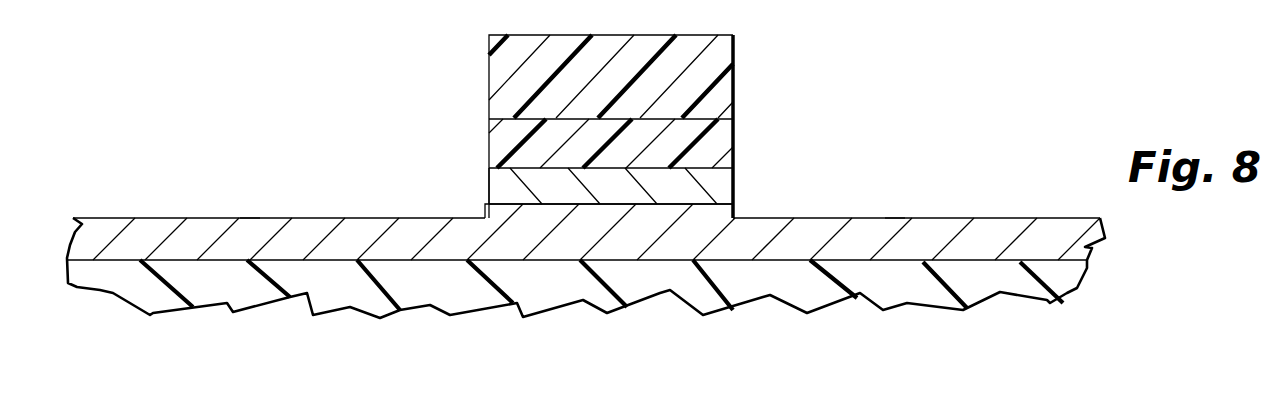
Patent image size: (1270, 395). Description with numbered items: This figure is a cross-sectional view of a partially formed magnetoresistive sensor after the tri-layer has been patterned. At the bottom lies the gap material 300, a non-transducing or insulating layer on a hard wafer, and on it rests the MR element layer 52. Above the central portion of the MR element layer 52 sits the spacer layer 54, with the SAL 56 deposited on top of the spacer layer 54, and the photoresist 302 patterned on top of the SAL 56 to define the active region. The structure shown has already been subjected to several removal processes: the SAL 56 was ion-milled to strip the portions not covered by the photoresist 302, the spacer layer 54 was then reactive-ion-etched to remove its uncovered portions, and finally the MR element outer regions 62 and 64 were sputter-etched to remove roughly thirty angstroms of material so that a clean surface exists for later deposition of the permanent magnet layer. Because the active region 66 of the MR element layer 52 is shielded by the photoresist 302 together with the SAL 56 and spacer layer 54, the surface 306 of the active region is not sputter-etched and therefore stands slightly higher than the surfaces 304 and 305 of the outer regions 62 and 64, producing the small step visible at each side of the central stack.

The MR element layer 52 is at (1092, 248).
The spacer layer 54 is at (718, 181).
The SAL 56 is at (720, 132).
The MR element outer region 62 is at (295, 248).
The MR element outer region 64 is at (913, 248).
The active region 66 is at (625, 242).
The gap material 300 is at (1060, 277).
The photoresist 302 is at (715, 63).
The surface of outer region 304 is at (250, 218).
The surface of outer region 305 is at (893, 217).
The surface of the active region 306 is at (505, 199).